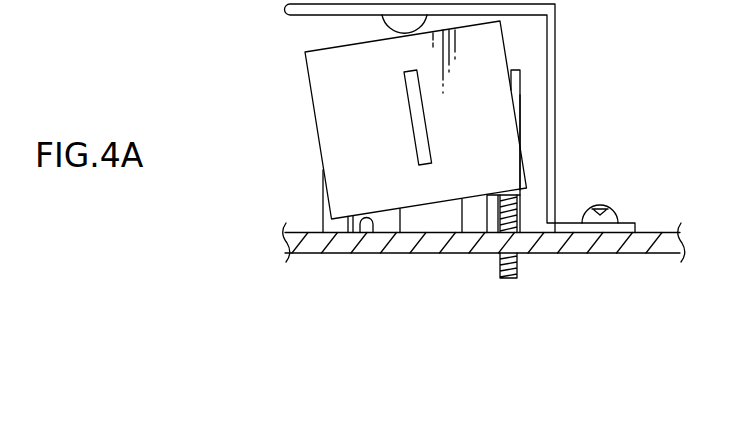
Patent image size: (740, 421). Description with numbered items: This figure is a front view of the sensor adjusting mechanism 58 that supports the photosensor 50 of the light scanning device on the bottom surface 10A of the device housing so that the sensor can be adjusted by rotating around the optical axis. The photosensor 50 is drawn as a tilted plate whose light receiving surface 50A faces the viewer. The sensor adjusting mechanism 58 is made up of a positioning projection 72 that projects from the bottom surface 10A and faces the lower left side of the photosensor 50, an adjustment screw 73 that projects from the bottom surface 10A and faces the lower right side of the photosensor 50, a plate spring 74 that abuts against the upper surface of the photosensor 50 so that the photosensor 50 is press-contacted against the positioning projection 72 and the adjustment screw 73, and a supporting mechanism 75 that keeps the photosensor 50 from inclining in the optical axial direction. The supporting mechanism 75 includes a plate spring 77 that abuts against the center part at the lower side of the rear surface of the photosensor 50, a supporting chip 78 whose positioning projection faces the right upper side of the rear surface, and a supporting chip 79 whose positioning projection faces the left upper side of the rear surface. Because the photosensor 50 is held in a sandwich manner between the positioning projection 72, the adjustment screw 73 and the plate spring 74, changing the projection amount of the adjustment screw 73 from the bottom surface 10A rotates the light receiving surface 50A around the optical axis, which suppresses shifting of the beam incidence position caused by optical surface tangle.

The bottom surface 10A is at (320, 253).
The photosensor 50 is at (311, 97).
The light receiving surface 50A is at (415, 118).
The sensor adjusting mechanism 58 is at (458, 338).
The positioning projection 72 is at (363, 213).
The adjustment screw 73 is at (508, 278).
The plate spring 74 is at (555, 182).
The supporting mechanism 75 is at (522, 117).
The plate spring 77 is at (464, 216).
The supporting chip 78 is at (520, 82).
The supporting chip 79 is at (323, 197).